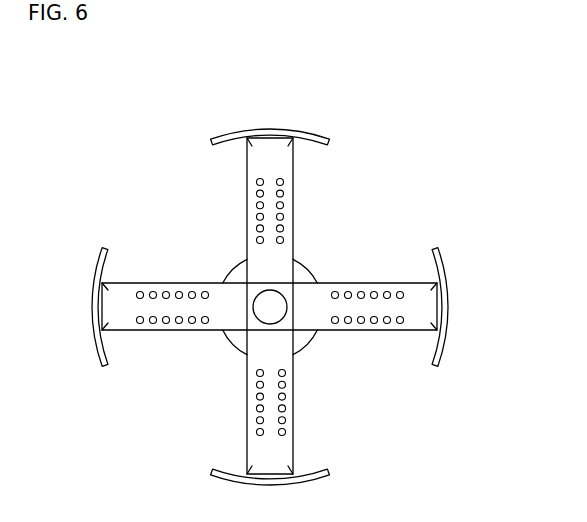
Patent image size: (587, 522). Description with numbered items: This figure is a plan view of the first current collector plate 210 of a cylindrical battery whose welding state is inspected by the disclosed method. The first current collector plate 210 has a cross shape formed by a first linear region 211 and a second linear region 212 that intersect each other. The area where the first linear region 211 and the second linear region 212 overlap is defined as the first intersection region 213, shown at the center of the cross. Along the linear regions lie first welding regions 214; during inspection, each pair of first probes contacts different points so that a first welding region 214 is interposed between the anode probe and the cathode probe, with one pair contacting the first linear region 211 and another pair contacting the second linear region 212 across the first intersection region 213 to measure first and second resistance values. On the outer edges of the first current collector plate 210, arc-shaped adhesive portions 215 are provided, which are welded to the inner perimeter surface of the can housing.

The first current collector plate 210 is at (86, 164).
The first linear region 211 is at (275, 165).
The second linear region 212 is at (127, 316).
The first intersection region 213 is at (282, 326).
The first welding region 214 is at (281, 237).
The arc-shaped adhesive portion 215 is at (297, 134).